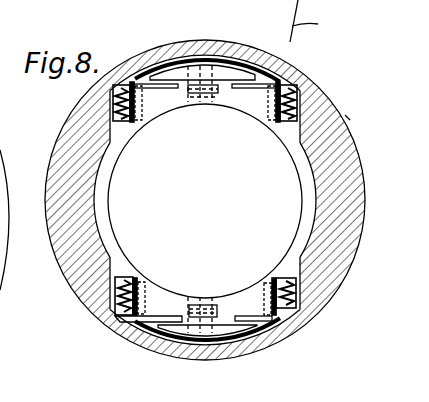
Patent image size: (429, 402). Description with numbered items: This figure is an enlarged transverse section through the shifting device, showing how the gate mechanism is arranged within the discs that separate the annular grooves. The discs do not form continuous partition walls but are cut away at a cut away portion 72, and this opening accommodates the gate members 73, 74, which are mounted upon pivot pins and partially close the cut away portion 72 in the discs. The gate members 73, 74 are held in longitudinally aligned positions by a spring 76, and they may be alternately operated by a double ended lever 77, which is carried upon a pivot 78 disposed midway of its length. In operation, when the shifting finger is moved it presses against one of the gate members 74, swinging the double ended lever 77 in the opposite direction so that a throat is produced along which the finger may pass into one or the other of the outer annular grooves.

The cut away portion 72 is at (307, 100).
The gate member 73 is at (172, 102).
The gate member 74 is at (235, 99).
The spring 76 is at (250, 52).
The double ended lever 77 is at (181, 331).
The pivot 78 is at (201, 48).